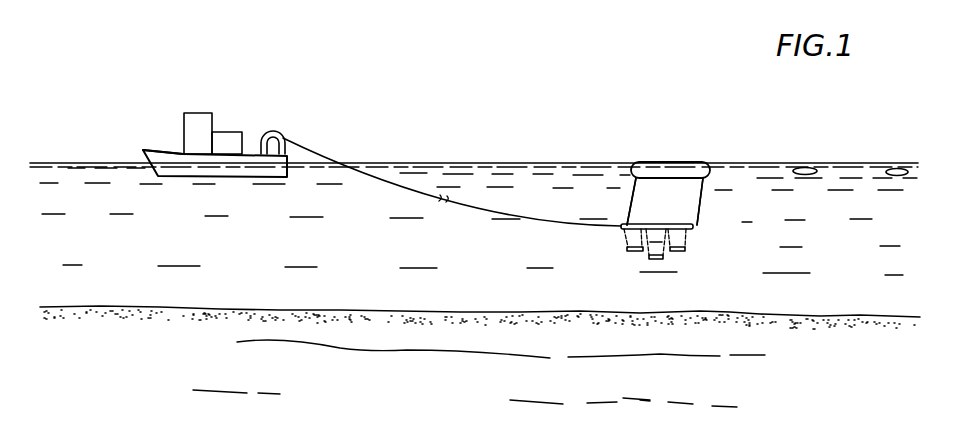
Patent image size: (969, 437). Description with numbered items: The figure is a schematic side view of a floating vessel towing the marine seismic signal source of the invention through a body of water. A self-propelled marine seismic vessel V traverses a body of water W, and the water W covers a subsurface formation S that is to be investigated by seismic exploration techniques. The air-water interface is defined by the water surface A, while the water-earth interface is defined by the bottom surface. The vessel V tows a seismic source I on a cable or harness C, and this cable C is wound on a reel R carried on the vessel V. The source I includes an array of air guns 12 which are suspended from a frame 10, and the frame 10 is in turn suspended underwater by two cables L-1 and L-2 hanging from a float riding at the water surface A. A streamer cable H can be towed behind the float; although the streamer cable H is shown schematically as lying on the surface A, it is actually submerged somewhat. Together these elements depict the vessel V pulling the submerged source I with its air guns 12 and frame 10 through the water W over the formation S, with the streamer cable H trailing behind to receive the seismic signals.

The water surface A is at (85, 161).
The marine seismic vessel V is at (163, 149).
The reel R is at (275, 132).
The cable or harness C is at (545, 225).
The body of water W is at (238, 256).
The seismic source I is at (666, 202).
The cable L-1 is at (632, 205).
The cable L-2 is at (703, 205).
The frame 10 is at (690, 229).
The air guns 12 is at (675, 252).
The streamer cable H is at (897, 168).
The subsurface formation S is at (428, 347).